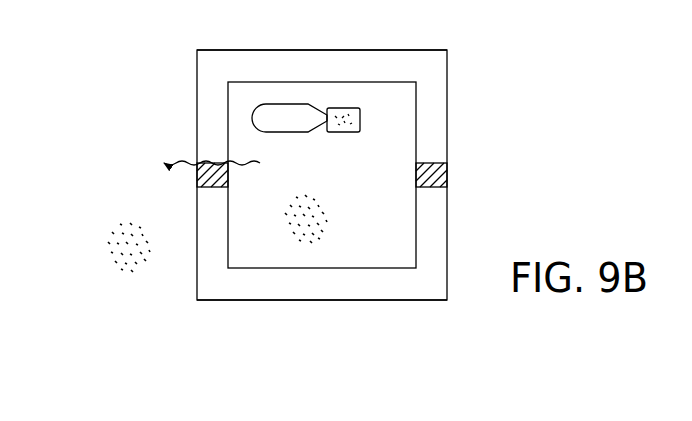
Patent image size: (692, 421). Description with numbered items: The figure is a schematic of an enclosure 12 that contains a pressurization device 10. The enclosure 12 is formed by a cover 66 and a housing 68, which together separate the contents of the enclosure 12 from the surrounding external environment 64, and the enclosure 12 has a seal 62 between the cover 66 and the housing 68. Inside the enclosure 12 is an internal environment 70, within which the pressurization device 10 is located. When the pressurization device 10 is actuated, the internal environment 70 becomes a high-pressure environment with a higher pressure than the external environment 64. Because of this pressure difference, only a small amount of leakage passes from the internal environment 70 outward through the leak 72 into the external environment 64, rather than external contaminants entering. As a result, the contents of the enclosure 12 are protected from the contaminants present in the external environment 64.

The pressurization device 10 is at (360, 109).
The enclosure 12 is at (466, 129).
The seal 62 is at (456, 175).
The external environment 64 is at (118, 276).
The cover 66 is at (337, 50).
The housing 68 is at (411, 291).
The internal environment 70 is at (311, 248).
The leak 72 is at (177, 152).